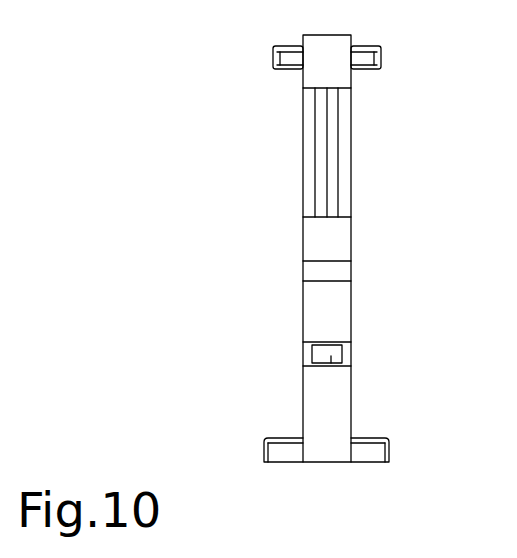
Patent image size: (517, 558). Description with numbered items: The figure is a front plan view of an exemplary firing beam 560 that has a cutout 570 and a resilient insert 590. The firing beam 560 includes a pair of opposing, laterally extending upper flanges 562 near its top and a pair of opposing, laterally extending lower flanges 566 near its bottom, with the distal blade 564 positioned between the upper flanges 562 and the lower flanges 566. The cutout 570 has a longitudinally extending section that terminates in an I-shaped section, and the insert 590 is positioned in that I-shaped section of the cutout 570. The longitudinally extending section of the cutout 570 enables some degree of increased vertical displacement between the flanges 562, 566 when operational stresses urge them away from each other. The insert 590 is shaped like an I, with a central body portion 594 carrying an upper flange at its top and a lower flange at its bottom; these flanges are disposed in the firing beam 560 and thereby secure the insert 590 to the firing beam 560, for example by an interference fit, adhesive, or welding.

The firing beam 560 is at (163, 66).
The upper flanges 562 is at (281, 59).
The distal blade 564 is at (328, 170).
The lower flanges 566 is at (377, 453).
The cutout 570 is at (365, 348).
The resilient insert 590 is at (305, 353).
The body portion 594 is at (332, 362).